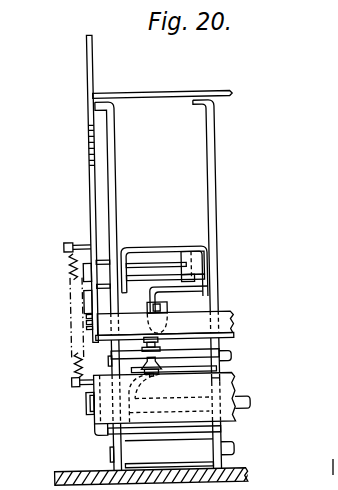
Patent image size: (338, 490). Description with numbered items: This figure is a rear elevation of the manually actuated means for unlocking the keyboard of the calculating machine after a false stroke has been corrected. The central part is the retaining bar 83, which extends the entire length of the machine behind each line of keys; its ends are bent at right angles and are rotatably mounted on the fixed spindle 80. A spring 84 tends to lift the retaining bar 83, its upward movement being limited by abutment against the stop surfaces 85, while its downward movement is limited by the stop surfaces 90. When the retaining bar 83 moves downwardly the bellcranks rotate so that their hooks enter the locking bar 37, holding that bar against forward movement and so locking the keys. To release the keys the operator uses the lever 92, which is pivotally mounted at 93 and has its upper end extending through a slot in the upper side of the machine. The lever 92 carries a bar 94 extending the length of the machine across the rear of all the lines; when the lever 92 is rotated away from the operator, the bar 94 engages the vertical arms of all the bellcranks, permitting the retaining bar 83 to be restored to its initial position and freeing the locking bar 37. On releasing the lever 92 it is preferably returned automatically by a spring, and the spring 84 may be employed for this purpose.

The lever 92 is at (90, 163).
The pivot 93 is at (82, 272).
The locking bar 37 is at (197, 288).
The bar 94 is at (231, 325).
The stop surfaces 85 is at (215, 370).
The spring 84 is at (72, 363).
The fixed spindle 80 is at (85, 402).
The retaining bar 83 is at (234, 417).
The stop surfaces 90 is at (212, 433).